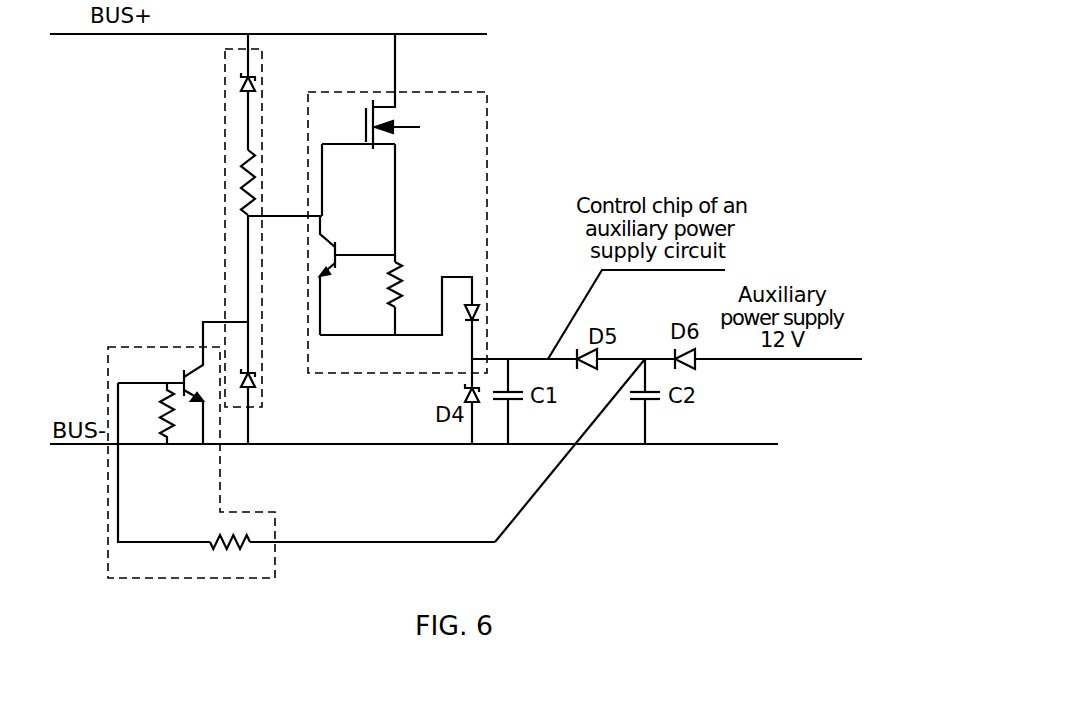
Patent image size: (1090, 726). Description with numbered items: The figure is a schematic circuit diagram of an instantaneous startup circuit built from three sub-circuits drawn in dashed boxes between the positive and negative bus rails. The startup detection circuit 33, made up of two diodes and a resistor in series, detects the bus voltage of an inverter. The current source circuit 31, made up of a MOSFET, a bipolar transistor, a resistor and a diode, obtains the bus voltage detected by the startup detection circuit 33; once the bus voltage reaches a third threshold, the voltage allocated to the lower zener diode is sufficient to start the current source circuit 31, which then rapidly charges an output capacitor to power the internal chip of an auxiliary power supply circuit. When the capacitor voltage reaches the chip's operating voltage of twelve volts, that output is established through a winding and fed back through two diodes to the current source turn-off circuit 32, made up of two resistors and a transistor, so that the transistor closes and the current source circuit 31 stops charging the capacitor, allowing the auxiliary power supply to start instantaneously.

The current source circuit 31 is at (488, 157).
The current source turn-off circuit 32 is at (130, 345).
The startup detection circuit 33 is at (225, 158).